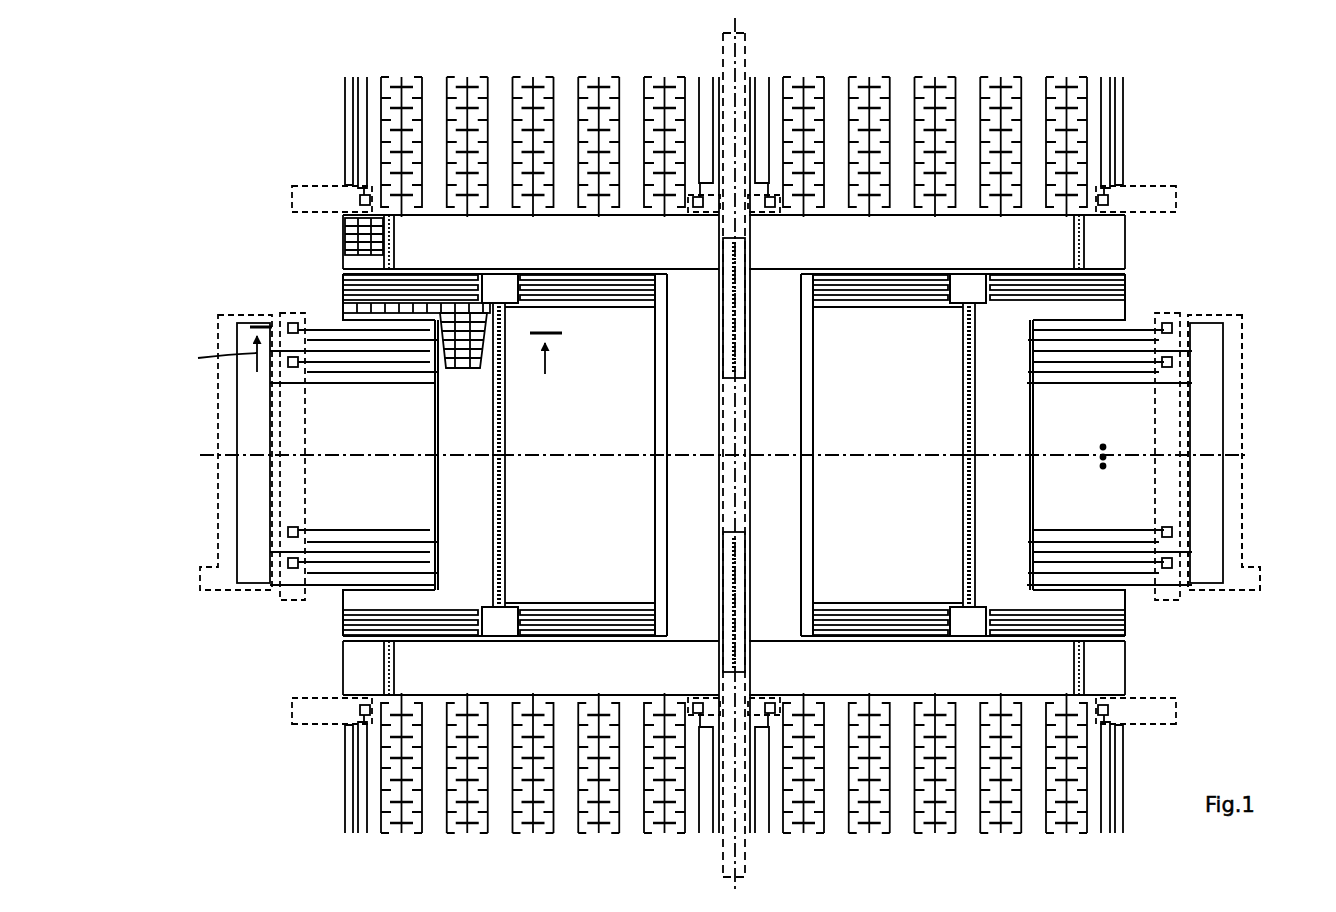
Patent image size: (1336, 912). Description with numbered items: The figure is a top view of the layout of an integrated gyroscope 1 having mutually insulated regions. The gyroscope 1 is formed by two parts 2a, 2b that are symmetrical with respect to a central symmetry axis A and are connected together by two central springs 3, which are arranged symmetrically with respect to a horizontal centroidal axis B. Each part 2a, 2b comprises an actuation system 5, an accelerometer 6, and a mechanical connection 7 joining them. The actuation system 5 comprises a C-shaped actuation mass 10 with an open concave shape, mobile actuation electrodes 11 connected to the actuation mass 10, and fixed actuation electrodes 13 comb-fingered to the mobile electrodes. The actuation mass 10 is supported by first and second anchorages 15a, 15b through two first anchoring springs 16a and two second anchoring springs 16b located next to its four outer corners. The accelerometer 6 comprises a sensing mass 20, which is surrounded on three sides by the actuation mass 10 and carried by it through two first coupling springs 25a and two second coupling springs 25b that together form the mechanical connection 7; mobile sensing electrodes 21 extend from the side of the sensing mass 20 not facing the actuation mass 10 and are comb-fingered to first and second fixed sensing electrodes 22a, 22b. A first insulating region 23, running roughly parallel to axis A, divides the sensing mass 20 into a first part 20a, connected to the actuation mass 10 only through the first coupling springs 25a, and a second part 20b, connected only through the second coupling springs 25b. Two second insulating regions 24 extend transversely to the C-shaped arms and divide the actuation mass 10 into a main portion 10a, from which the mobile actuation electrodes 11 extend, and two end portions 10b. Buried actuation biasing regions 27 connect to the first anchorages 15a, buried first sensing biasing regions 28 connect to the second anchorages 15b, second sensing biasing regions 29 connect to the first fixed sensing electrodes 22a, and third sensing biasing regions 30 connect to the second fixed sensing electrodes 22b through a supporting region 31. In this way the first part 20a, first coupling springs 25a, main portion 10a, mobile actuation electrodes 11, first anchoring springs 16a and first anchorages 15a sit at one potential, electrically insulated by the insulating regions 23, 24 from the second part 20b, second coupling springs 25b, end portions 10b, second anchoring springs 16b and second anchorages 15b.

The gyroscope 1 is at (736, 452).
The left-hand part 2a is at (268, 681).
The right-hand part 2b is at (1210, 609).
The central springs 3 is at (740, 302).
The actuation system 5 is at (568, 844).
The accelerometer 6 is at (632, 420).
The mechanical connection 7 is at (564, 302).
The actuation mass 10 is at (680, 308).
The main portion of the actuation mass 10a is at (694, 251).
The end portions of the actuation mass 10b is at (345, 256).
The mobile actuation electrodes 11 is at (463, 70).
The fixed actuation electrodes 13 is at (585, 74).
The first anchorages 15a is at (697, 196).
The second anchorages 15b is at (362, 196).
The first anchoring springs 16a is at (706, 77).
The second anchoring springs 16b is at (349, 140).
The sensing mass 20 is at (840, 322).
The first part of the sensing mass 20a is at (632, 544).
The second part of the sensing mass 20b is at (486, 542).
The mobile sensing electrodes 21 is at (402, 376).
The first fixed sensing electrodes 22a is at (322, 366).
The second fixed sensing electrodes 22b is at (358, 386).
The first insulating region 23 is at (497, 446).
The second insulating regions 24 is at (395, 256).
The first coupling springs 25a is at (540, 276).
The second coupling springs 25b is at (345, 287).
The actuation biasing regions 27 is at (741, 68).
The first sensing biasing regions 28 is at (294, 199).
The second sensing biasing regions 29 is at (287, 320).
The third sensing biasing regions 30 is at (1268, 332).
The supporting region 31 is at (240, 492).
The central symmetry axis A is at (742, 60).
The horizontal centroidal axis B is at (1242, 456).